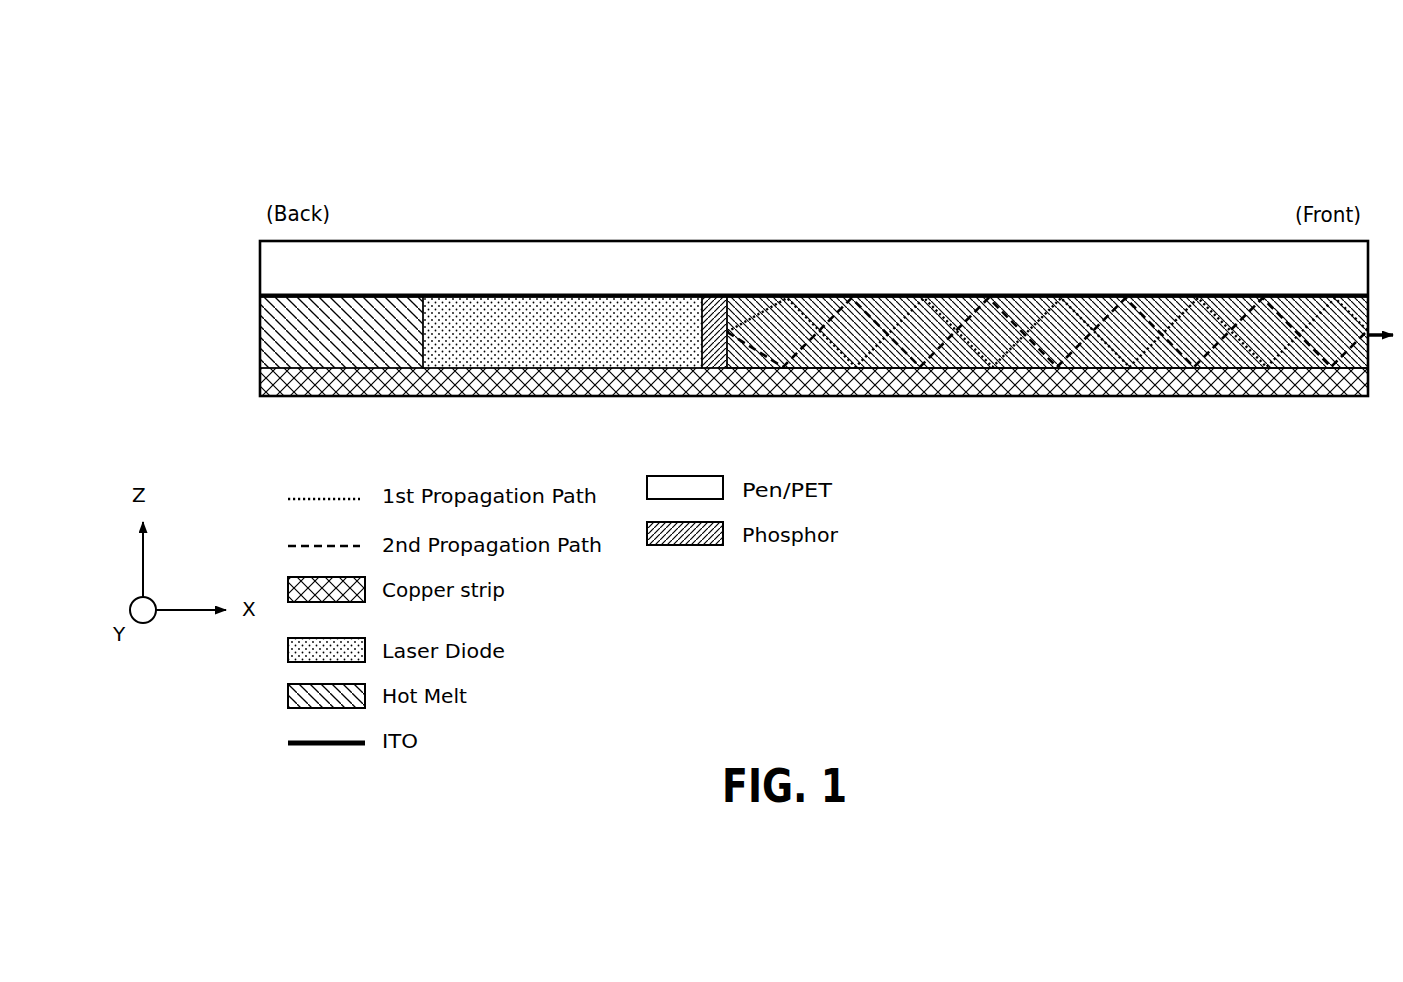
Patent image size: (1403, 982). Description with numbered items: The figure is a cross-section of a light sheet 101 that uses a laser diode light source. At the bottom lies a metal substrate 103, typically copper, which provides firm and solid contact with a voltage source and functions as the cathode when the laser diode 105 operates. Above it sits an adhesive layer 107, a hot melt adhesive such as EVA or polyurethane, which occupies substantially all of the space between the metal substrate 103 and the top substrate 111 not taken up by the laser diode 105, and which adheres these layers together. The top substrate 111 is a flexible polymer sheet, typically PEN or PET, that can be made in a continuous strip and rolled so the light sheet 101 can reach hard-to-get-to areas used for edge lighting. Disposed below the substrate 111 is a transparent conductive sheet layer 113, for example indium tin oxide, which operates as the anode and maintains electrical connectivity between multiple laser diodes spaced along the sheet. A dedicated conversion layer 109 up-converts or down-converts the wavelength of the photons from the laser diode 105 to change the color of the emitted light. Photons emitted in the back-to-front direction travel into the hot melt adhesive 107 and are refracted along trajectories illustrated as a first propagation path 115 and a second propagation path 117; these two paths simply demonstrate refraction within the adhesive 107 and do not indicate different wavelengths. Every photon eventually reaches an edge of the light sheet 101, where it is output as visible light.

The light sheet 101 is at (789, 264).
The metal substrate 103 is at (1149, 383).
The laser diode 105 is at (539, 329).
The adhesive layer 107 is at (280, 331).
The conversion layer 109 is at (716, 329).
The substrate 111 is at (1090, 268).
The conductive sheet layer 113 is at (597, 290).
The first propagation path 115 is at (812, 335).
The second propagation path 117 is at (1217, 355).